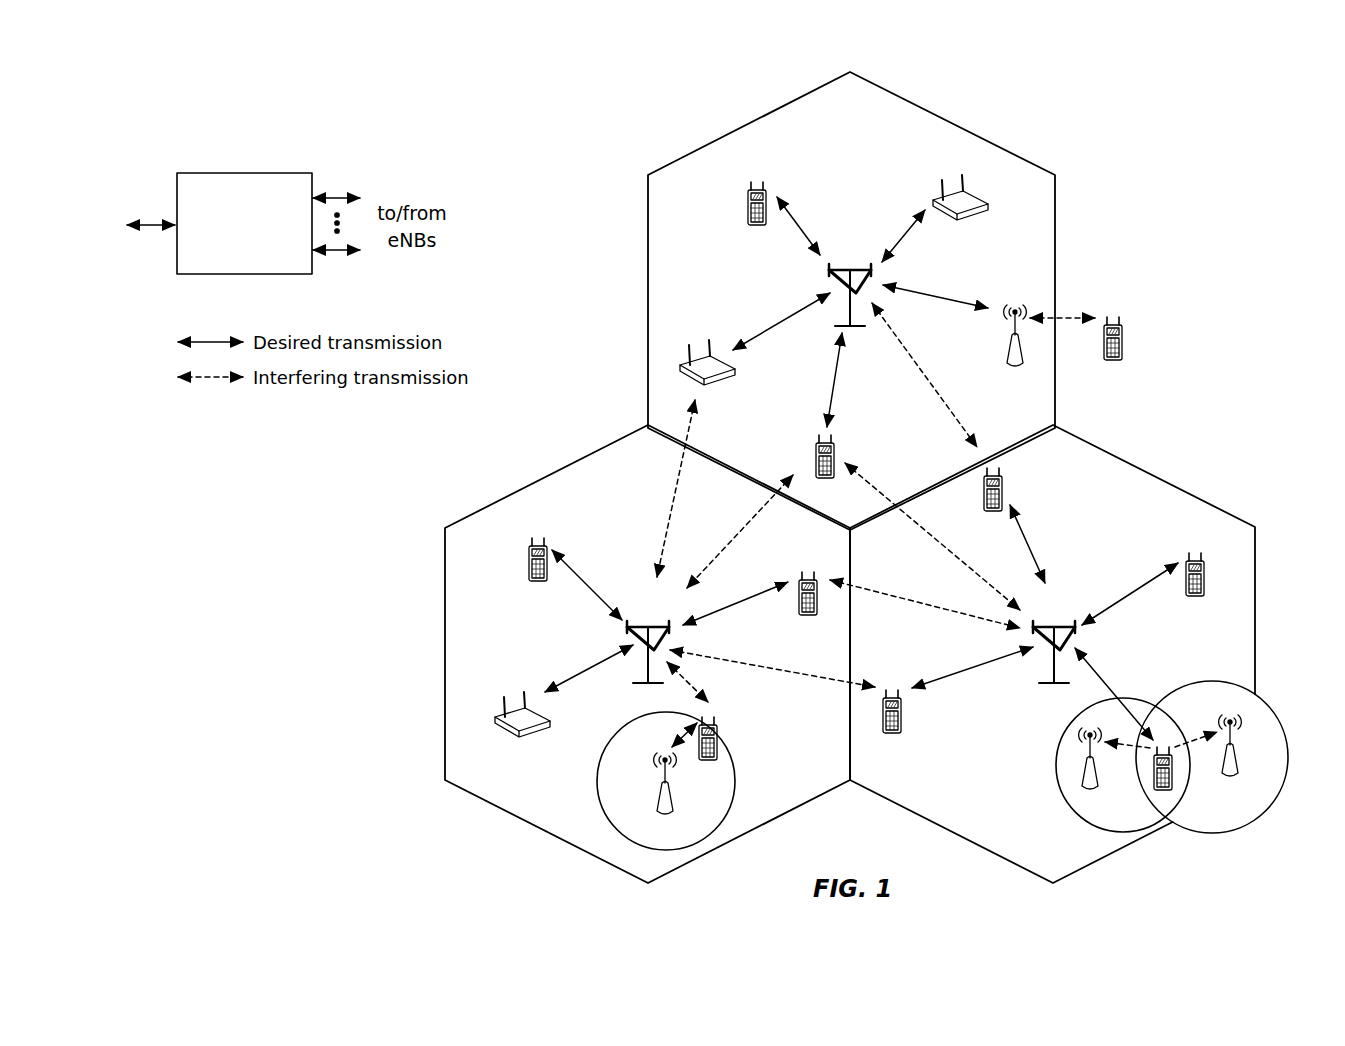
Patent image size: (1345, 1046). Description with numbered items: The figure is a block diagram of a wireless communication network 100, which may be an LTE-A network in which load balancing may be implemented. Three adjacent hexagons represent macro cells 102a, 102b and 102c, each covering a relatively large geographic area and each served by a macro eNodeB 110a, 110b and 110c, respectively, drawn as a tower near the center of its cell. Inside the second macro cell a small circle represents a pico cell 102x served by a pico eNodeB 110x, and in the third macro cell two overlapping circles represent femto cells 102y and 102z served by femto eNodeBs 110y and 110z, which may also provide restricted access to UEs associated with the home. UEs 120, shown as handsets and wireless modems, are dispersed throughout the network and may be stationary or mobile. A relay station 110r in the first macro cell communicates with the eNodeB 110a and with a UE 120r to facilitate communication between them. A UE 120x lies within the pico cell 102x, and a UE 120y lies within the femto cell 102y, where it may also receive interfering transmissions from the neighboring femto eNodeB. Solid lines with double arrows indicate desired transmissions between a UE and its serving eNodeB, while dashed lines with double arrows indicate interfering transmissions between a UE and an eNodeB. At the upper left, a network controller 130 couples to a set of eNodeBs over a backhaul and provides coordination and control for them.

The wireless communication network 100 is at (1192, 136).
The macro cell 102a is at (954, 123).
The macro cell 102b is at (552, 474).
The macro cell 102c is at (1156, 478).
The pico cell 102x is at (622, 728).
The femto cell 102y is at (1060, 733).
The femto cell 102z is at (1214, 682).
The macro eNodeB 110a is at (846, 268).
The macro eNodeB 110b is at (648, 624).
The macro eNodeB 110c is at (1053, 624).
The relay station 110r is at (1005, 352).
The pico eNodeB 110x is at (673, 805).
The femto eNodeB 110y is at (1097, 780).
The femto eNodeB 110z is at (1237, 767).
The UE 120 is at (747, 197).
The UE 120r is at (1122, 352).
The UE 120x is at (718, 730).
The UE 120y is at (1153, 781).
The network controller 130 is at (245, 172).